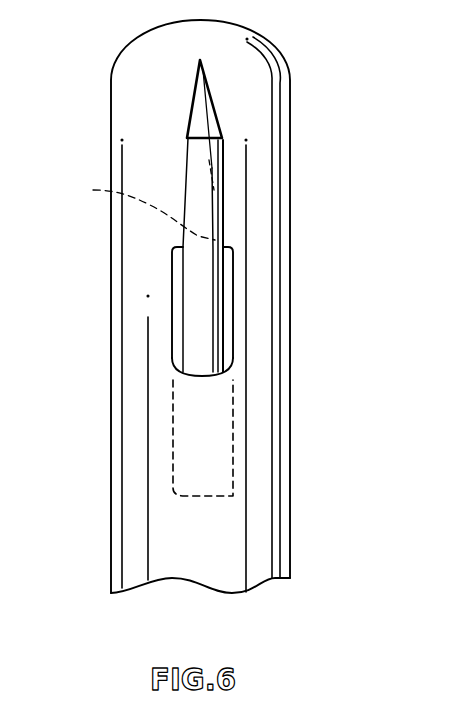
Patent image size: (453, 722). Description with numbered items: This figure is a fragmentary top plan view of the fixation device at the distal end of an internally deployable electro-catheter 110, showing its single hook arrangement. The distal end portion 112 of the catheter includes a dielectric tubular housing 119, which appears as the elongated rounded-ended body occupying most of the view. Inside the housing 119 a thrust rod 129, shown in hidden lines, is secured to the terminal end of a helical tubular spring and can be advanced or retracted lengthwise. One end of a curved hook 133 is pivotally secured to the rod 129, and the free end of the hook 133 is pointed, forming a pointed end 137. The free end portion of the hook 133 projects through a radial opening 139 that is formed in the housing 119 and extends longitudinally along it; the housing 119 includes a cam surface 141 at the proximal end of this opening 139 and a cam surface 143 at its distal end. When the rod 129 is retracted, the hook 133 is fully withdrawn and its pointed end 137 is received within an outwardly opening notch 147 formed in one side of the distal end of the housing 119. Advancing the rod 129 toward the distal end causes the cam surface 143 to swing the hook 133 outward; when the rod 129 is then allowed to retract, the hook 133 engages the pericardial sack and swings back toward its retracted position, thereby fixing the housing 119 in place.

The electro-catheter 110 is at (297, 310).
The distal end portion 112 is at (113, 428).
The dielectric tubular housing 119 is at (279, 490).
The thrust rod 129 is at (222, 422).
The curved hook 133 is at (208, 195).
The pointed end 137 is at (247, 29).
The radial opening 139 is at (172, 298).
The cam surface 141 is at (195, 373).
The cam surface 143 is at (131, 207).
The outwardly opening notch 147 is at (200, 62).